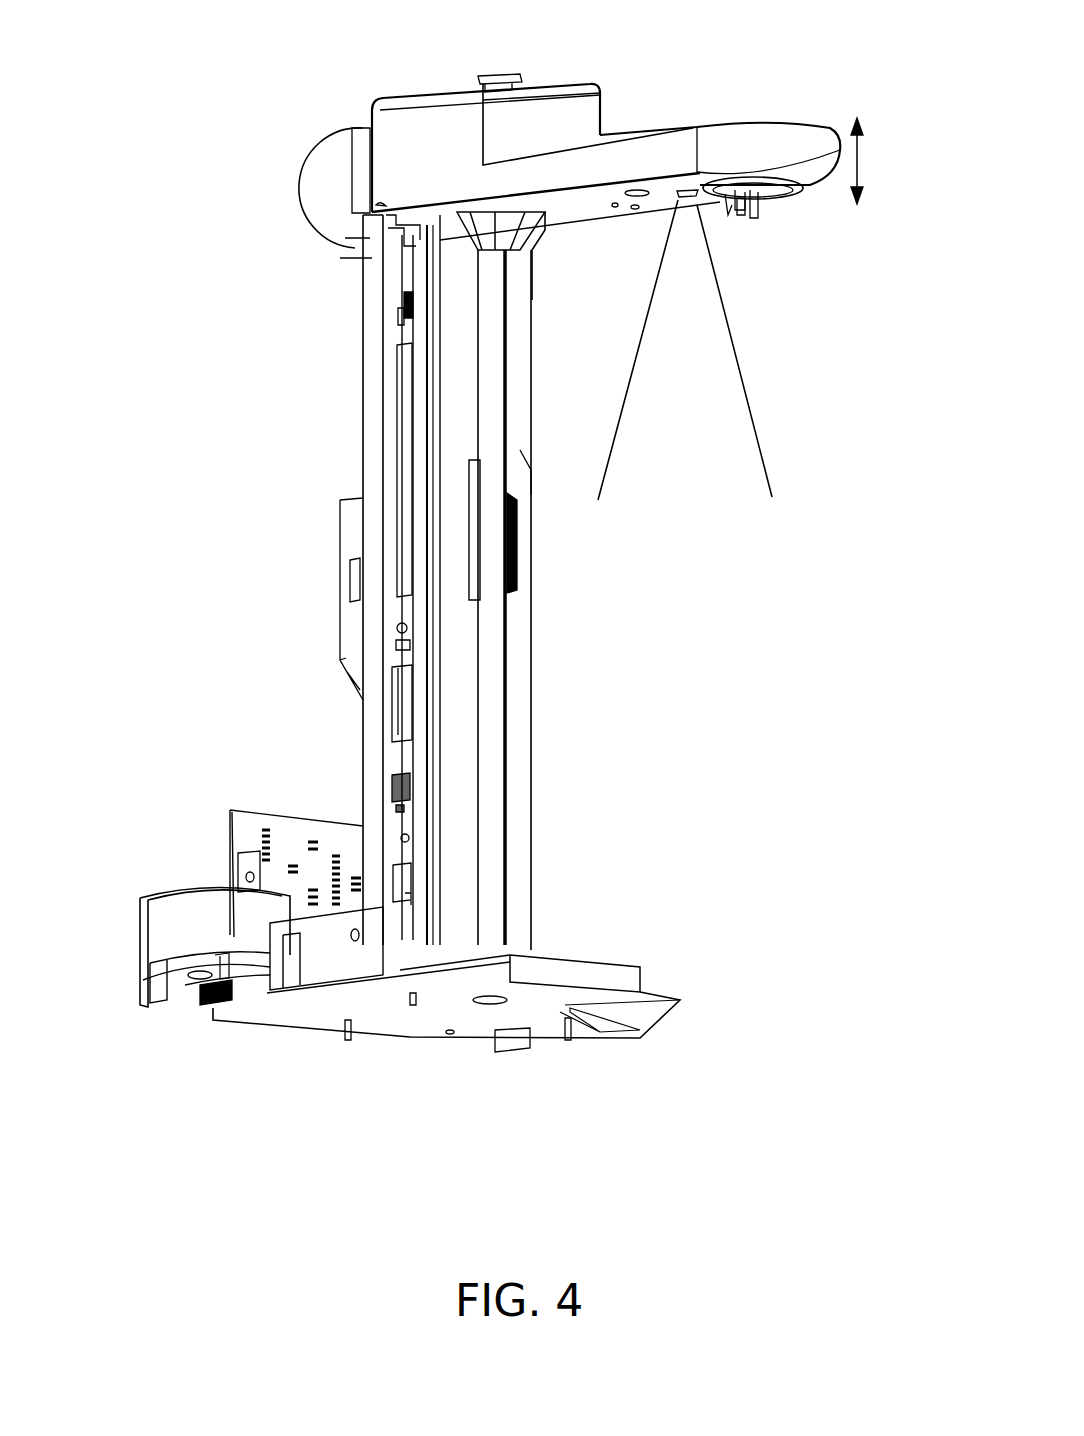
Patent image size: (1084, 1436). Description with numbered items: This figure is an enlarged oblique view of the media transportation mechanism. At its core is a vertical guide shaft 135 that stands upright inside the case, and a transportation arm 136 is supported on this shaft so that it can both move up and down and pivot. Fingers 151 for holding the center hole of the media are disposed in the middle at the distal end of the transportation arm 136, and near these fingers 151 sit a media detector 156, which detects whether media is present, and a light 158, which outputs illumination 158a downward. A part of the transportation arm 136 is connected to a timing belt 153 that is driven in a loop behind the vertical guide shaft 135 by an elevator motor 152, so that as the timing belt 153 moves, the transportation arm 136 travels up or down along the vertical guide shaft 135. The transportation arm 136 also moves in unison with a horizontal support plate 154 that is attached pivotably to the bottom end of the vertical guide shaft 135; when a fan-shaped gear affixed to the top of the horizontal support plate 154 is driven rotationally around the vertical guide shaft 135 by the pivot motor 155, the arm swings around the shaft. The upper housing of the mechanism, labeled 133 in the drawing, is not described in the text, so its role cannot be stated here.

The head housing 133 is at (410, 88).
The transportation arm 136 is at (654, 124).
The elevator motor 152 is at (333, 178).
The fingers 151 is at (762, 222).
The media detector 156 is at (742, 214).
The light 158 is at (680, 198).
The illumination 158a is at (757, 423).
The timing belt 153 is at (422, 416).
The vertical guide shaft 135 is at (493, 765).
The pivot motor 155 is at (188, 905).
The horizontal support plate 154 is at (528, 1020).